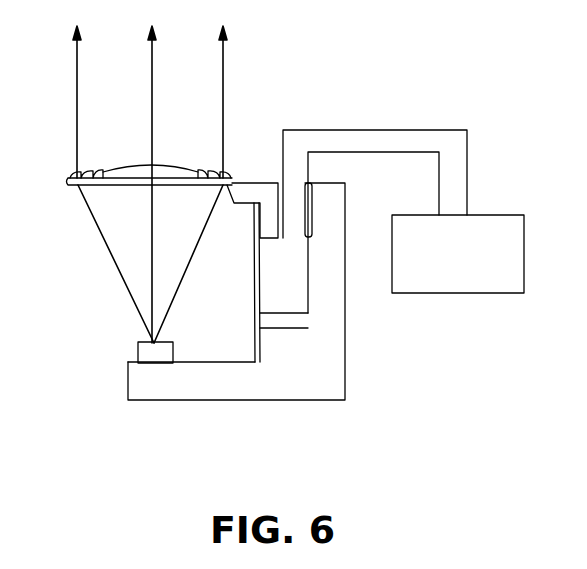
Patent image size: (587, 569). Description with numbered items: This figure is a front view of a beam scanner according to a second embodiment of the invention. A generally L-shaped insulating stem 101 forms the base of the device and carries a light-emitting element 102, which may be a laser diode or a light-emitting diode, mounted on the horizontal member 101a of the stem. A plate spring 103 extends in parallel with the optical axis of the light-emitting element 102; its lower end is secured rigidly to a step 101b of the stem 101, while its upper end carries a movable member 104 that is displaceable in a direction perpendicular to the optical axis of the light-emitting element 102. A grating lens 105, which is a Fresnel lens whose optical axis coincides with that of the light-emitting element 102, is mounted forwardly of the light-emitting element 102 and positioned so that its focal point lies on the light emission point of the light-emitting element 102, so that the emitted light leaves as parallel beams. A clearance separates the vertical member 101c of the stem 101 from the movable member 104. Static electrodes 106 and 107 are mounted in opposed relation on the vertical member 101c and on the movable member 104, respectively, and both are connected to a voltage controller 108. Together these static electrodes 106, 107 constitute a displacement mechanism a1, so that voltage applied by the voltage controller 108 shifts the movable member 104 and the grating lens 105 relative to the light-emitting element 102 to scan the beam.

The insulating stem 101 is at (345, 370).
The horizontal member 101a is at (198, 362).
The step 101b is at (288, 328).
The vertical member 101c is at (329, 207).
The light-emitting element 102 is at (138, 352).
The plate spring 103 is at (310, 313).
The movable member 104 is at (257, 195).
The grating lens 105 is at (68, 186).
The static electrode 106 is at (312, 197).
The static electrode 107 is at (287, 190).
The voltage controller 108 is at (485, 213).
The displacement mechanism a1 is at (315, 172).